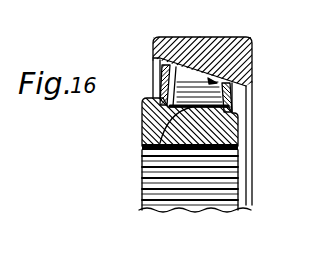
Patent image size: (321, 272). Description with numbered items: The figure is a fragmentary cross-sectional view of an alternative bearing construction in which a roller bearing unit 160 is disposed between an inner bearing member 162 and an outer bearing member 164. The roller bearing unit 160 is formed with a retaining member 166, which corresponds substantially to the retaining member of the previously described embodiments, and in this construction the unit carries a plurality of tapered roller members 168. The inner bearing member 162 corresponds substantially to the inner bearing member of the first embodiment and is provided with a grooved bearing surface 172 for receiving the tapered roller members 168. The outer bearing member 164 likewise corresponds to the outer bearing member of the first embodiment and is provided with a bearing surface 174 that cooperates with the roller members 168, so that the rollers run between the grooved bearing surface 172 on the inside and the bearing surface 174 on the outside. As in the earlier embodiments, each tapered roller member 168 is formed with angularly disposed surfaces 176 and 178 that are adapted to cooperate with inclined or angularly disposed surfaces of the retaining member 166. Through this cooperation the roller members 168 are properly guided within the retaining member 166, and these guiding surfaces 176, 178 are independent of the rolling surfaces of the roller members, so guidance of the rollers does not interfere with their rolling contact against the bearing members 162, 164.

The roller bearing unit 160 is at (252, 73).
The inner bearing member 162 is at (141, 142).
The outer bearing member 164 is at (215, 36).
The retaining member 166 is at (160, 74).
The tapered roller members 168 is at (199, 115).
The grooved bearing surface 172 is at (143, 165).
The bearing surface 174 is at (167, 36).
The angularly disposed surface 176 is at (158, 99).
The angularly disposed surface 178 is at (228, 126).